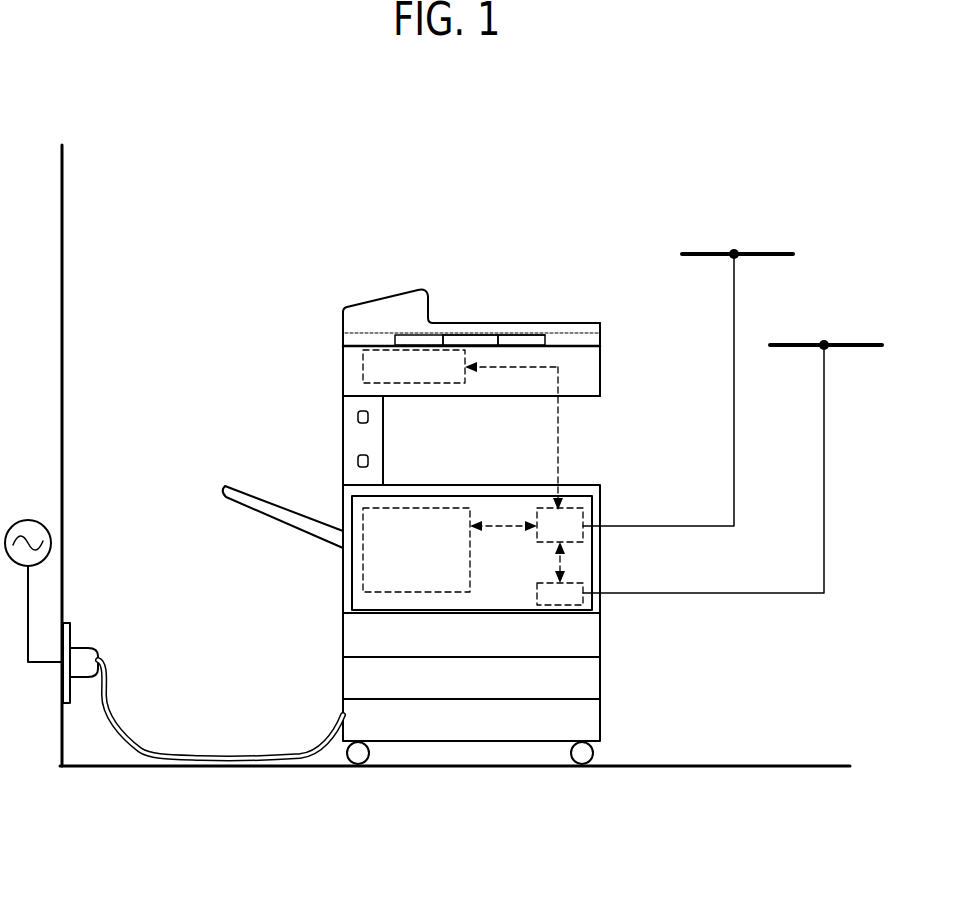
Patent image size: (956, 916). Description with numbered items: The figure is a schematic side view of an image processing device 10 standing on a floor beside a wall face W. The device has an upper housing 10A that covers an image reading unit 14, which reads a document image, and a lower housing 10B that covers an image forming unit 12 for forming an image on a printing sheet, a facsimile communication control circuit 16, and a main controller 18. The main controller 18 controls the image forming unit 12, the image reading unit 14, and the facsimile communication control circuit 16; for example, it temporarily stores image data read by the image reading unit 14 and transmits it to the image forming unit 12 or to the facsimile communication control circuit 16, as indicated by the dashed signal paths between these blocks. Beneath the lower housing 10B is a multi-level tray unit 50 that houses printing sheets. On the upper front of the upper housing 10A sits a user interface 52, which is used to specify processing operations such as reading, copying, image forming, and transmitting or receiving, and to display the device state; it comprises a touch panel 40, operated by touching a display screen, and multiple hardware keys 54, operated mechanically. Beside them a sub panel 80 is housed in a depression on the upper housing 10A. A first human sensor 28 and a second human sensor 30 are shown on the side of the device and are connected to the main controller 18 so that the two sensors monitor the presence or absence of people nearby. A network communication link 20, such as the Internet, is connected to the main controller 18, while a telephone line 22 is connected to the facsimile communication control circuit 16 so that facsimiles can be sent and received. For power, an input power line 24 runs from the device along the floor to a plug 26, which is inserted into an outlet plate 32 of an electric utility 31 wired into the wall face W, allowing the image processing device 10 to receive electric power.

The image processing device 10 is at (348, 286).
The upper housing 10A is at (600, 362).
The lower housing 10B is at (350, 564).
The image forming unit 12 is at (346, 580).
The image reading unit 14 is at (363, 370).
The facsimile communication control circuit 16 is at (588, 585).
The main controller 18 is at (588, 515).
The network communication link 20 is at (722, 252).
The telephone line 22 is at (845, 345).
The input power line 24 is at (122, 738).
The plug 26 is at (94, 660).
The first human sensor 28 is at (356, 460).
The second human sensor 30 is at (356, 417).
The electric utility 31 is at (28, 519).
The outlet plate 32 is at (69, 633).
The touch panel 40 is at (470, 340).
The multi-level tray unit 50 is at (607, 674).
The user interface 52 is at (545, 288).
The hardware keys 54 is at (520, 340).
The sub panel 80 is at (440, 336).
The wall face W is at (64, 249).